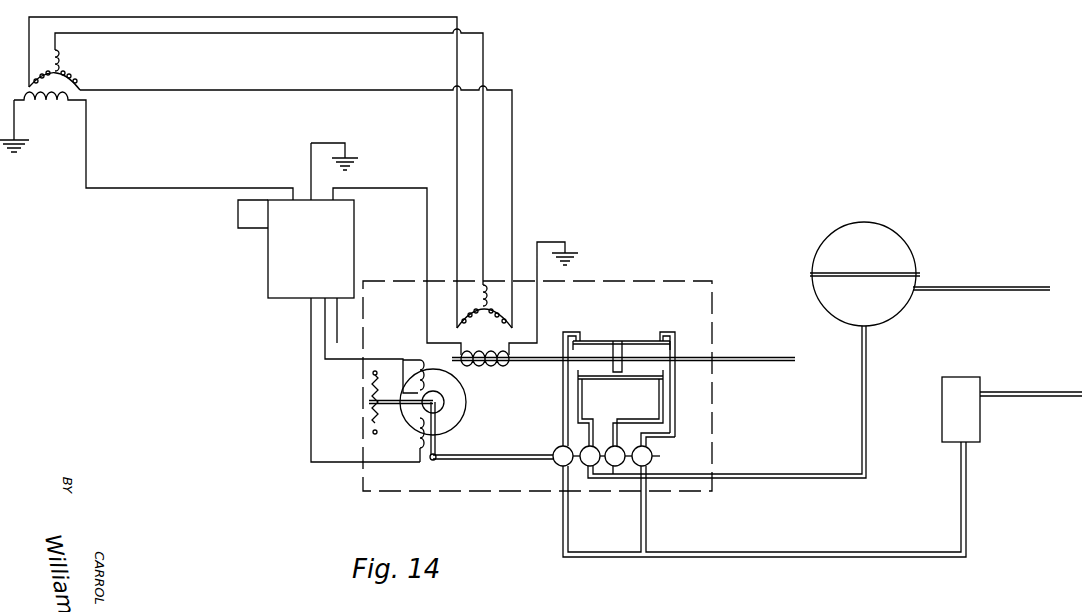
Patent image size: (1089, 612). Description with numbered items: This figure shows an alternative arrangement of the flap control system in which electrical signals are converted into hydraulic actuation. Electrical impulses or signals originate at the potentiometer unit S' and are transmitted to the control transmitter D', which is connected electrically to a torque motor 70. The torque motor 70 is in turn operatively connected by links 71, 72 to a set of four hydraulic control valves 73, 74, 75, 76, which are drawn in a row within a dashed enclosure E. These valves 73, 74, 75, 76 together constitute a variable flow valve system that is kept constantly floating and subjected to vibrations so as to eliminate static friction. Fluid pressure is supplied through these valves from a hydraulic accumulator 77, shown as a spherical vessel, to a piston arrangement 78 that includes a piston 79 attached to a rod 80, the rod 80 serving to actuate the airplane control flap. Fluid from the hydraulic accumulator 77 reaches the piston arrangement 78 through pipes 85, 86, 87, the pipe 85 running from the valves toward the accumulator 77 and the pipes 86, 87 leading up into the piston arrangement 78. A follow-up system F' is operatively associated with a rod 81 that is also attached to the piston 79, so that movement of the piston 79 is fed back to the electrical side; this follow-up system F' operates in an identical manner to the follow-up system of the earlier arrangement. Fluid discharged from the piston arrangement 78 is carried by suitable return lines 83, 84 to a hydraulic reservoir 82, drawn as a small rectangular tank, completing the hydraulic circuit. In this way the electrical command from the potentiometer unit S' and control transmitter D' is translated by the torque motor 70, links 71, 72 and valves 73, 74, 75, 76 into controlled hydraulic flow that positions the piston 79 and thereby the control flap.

The potentiometer unit S' is at (153, 125).
The control transmitter D' is at (291, 249).
The follow-up system F' is at (510, 308).
The control apparatus enclosure E is at (468, 490).
The torque motor 70 is at (455, 416).
The link 71 is at (429, 459).
The link 72 is at (497, 460).
The hydraulic control valve 73 is at (559, 465).
The hydraulic control valve 74 is at (586, 470).
The hydraulic control valve 75 is at (616, 446).
The hydraulic control valve 76 is at (653, 454).
The hydraulic accumulator 77 is at (887, 236).
The piston arrangement 78 is at (613, 341).
The piston 79 is at (620, 374).
The rod 80 is at (700, 360).
The rod 81 is at (540, 362).
The hydraulic reservoir 82 is at (969, 383).
The return line 83 is at (563, 428).
The return line 84 is at (676, 418).
The pipe 85 is at (786, 478).
The pipe 86 is at (580, 412).
The pipe 87 is at (663, 406).